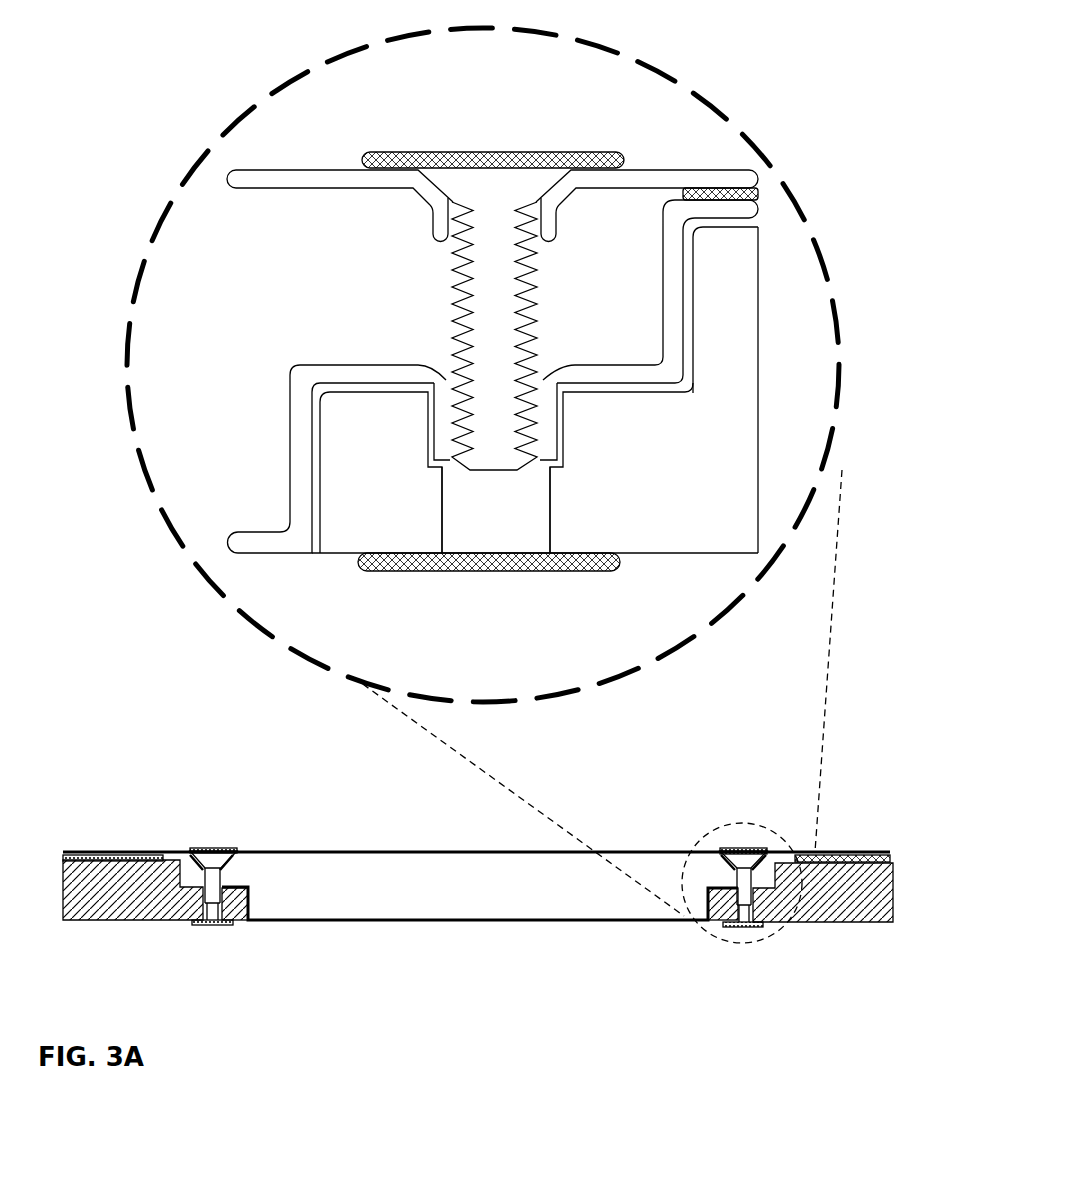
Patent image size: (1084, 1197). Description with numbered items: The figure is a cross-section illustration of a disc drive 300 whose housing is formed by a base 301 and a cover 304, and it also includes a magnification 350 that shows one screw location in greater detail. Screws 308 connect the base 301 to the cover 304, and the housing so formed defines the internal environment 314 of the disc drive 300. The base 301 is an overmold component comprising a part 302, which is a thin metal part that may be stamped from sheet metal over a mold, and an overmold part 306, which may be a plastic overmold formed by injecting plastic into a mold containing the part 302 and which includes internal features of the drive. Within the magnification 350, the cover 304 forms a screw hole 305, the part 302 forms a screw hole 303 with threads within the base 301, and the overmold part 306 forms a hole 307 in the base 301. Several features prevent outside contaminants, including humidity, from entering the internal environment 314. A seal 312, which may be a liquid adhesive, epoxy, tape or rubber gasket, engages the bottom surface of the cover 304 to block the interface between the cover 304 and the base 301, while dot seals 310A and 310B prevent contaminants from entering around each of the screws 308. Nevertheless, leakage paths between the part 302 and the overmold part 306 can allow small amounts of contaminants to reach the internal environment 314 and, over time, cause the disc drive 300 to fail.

The disc drive 300 is at (152, 769).
The base 301 is at (472, 926).
The part 302 is at (367, 919).
The screw hole 303 is at (450, 362).
The cover 304 is at (422, 851).
The screw hole 305 is at (449, 253).
The overmold part 306 is at (92, 921).
The hole 307 is at (514, 522).
The screws 308 is at (205, 880).
The dot seal 310A is at (190, 847).
The dot seal 310B is at (227, 927).
The seal 312 is at (62, 856).
The internal environment 314 is at (474, 896).
The magnification 350 is at (232, 122).